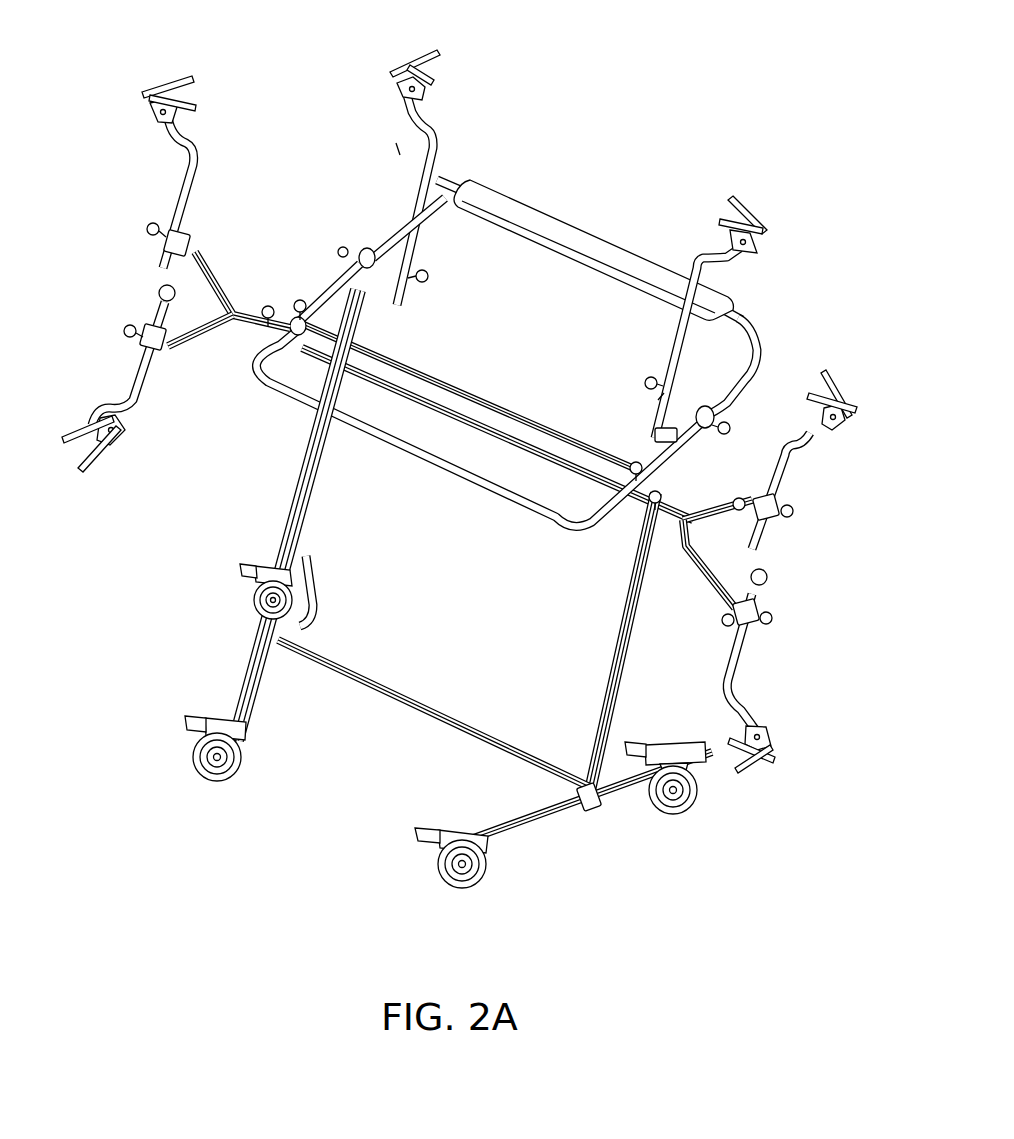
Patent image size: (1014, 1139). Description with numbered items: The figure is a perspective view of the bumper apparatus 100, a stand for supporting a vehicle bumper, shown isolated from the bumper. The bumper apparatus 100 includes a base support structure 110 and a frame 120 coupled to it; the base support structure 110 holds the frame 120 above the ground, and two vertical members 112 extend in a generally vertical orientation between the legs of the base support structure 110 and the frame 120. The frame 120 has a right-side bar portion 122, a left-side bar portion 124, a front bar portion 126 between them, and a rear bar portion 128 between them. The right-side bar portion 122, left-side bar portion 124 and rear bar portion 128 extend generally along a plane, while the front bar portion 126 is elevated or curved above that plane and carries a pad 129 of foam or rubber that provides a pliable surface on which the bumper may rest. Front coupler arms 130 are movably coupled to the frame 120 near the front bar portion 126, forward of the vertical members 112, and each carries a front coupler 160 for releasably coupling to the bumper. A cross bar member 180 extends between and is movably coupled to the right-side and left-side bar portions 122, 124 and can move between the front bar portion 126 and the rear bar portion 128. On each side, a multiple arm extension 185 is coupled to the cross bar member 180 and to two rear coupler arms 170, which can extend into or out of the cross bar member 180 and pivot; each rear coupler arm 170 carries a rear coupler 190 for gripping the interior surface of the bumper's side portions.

The bumper apparatus 100 is at (480, 449).
The base support structure 110 is at (448, 589).
The vertical member 112 is at (640, 634).
The frame 120 is at (535, 276).
The right-side bar portion 122 is at (748, 380).
The left-side bar portion 124 is at (338, 286).
The front bar portion 126 is at (736, 308).
The rear bar portion 128 is at (387, 447).
The pad 129 is at (554, 224).
The front coupler arm 130 is at (428, 165).
The front coupler 160 is at (425, 54).
The rear coupler arm 170 is at (178, 193).
The cross bar member 180 is at (513, 455).
The multiple arm extension 185 is at (203, 350).
The rear coupler 190 is at (186, 78).